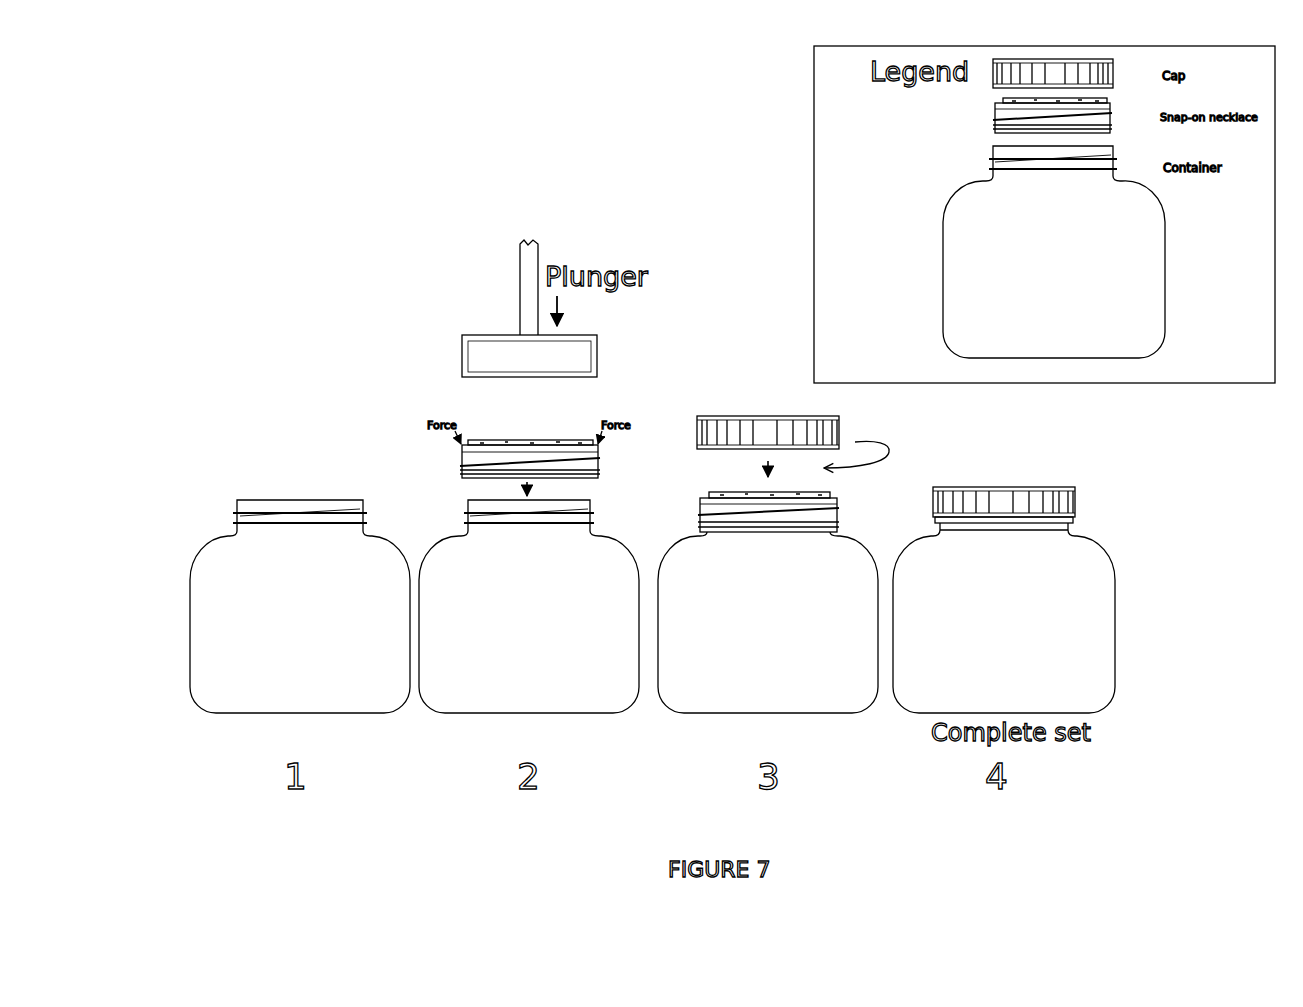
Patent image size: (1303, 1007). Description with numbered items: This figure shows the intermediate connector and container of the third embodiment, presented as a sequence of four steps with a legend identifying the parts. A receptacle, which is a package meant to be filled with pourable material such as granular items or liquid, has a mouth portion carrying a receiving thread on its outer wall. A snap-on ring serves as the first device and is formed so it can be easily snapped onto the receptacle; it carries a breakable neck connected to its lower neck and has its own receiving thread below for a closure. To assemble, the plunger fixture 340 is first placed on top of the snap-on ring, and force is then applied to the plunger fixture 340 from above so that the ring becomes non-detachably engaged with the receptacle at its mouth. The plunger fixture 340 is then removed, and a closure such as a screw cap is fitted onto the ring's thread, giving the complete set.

The plunger fixture 340 is at (532, 293).